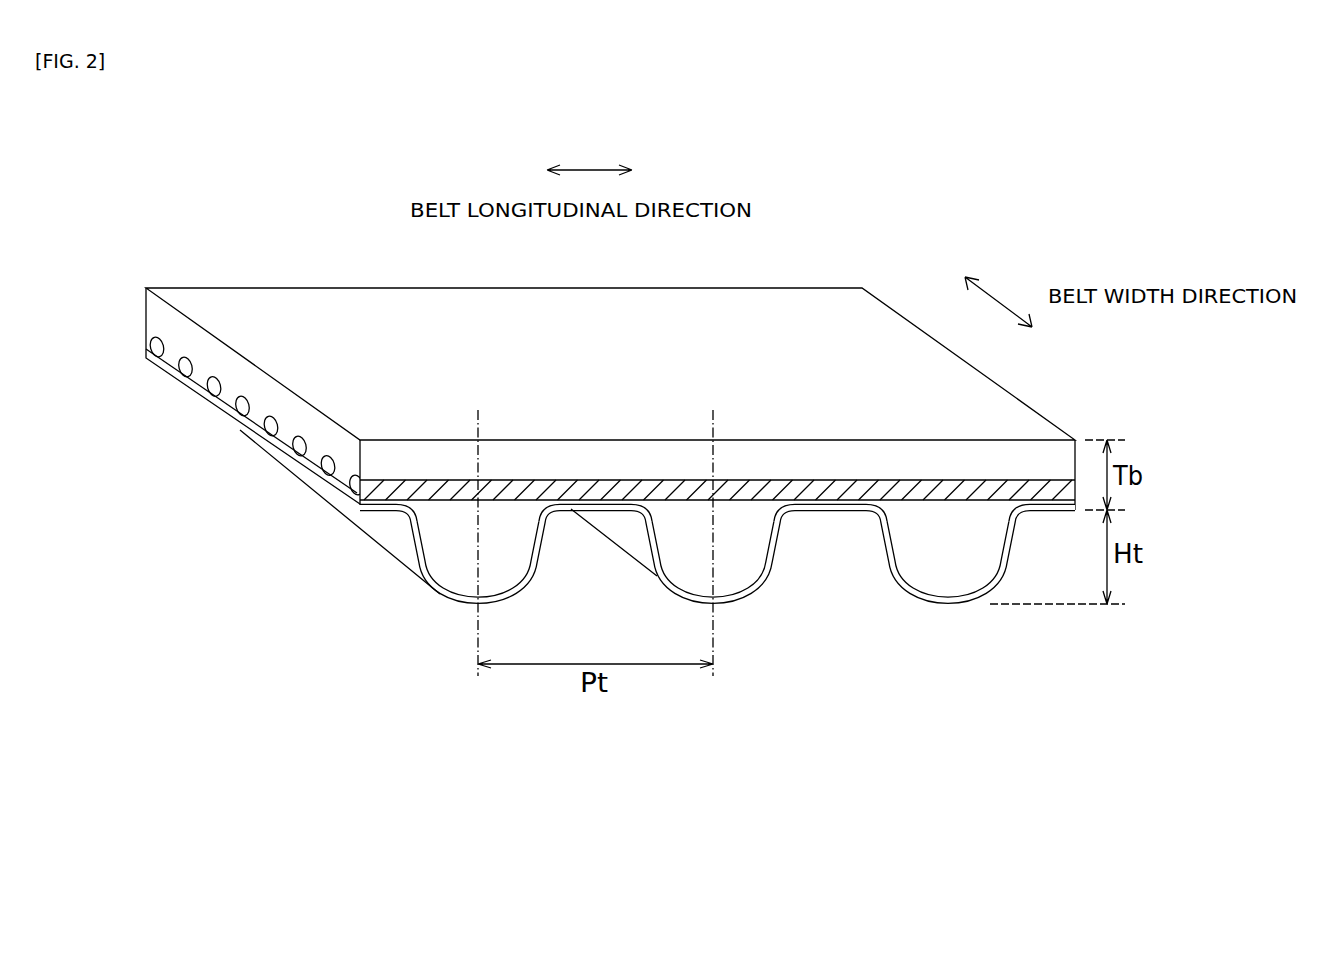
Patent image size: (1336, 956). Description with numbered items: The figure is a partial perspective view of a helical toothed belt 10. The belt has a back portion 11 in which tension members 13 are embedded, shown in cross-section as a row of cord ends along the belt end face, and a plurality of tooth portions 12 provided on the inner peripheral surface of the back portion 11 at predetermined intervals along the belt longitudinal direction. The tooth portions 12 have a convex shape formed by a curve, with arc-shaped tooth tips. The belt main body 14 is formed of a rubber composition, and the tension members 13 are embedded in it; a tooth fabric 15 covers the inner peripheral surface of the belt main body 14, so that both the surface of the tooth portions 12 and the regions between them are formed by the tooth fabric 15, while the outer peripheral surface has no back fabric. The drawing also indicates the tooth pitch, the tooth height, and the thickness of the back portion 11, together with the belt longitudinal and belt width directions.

The helical toothed belt 10 is at (610, 391).
The back portion 11 is at (443, 467).
The tooth portions 12 is at (657, 532).
The tension members 13 is at (330, 472).
The belt main body 14 is at (538, 467).
The tooth fabric 15 is at (385, 507).